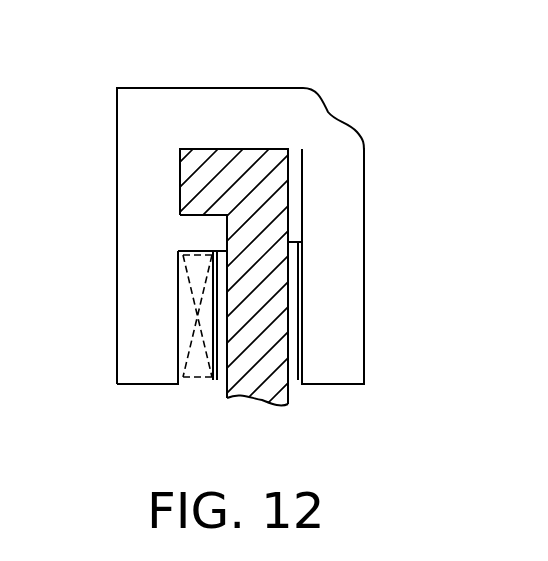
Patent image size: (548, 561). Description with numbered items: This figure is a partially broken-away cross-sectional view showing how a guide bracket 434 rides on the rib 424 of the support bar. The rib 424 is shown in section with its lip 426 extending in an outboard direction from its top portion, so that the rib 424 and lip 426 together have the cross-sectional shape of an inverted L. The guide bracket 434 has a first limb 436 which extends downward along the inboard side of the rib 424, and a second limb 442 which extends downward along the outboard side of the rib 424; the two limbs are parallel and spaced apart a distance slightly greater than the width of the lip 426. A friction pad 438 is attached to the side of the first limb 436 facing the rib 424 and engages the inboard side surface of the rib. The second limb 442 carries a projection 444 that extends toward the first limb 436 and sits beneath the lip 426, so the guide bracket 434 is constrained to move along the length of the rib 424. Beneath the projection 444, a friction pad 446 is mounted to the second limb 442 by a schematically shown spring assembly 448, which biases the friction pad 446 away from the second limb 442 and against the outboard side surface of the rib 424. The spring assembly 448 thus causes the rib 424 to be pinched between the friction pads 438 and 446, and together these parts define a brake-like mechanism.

The guide bracket 434 is at (284, 56).
The first limb 436 is at (345, 242).
The second limb 442 is at (127, 289).
The projection 444 is at (185, 232).
The lip 426 is at (200, 180).
The rib 424 is at (252, 428).
The friction pad 438 is at (298, 372).
The friction pad 446 is at (225, 382).
The spring assembly 448 is at (197, 382).